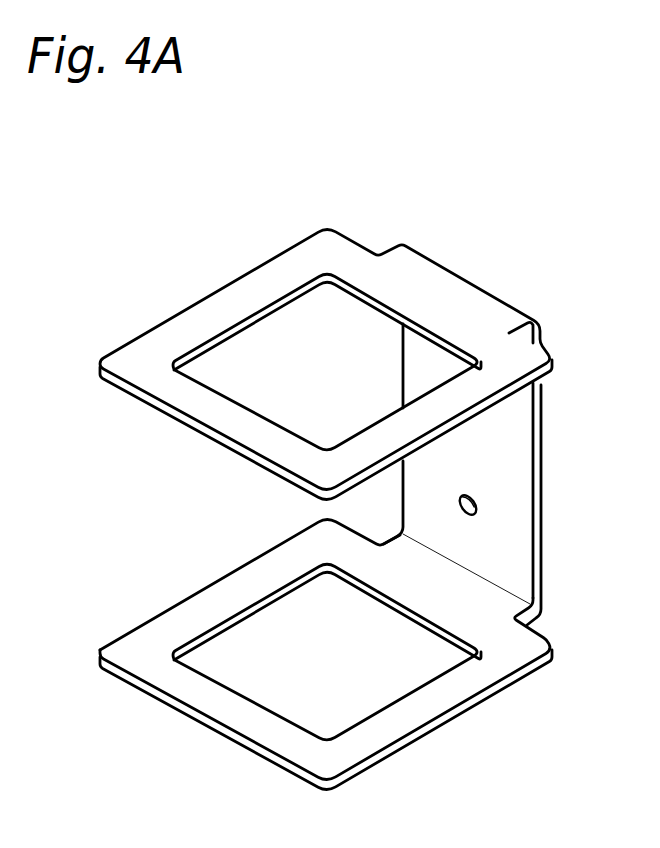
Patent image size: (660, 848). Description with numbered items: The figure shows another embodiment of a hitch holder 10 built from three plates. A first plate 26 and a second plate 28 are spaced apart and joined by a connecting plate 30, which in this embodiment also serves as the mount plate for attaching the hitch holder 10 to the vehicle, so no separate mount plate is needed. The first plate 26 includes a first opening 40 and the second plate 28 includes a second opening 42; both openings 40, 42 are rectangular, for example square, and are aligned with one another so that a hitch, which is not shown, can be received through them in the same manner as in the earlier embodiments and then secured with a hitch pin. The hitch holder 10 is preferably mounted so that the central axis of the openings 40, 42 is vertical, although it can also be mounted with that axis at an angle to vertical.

The hitch holder 10 is at (363, 454).
The first plate 26 is at (352, 654).
The second plate 28 is at (316, 348).
The connecting plate 30 is at (523, 442).
The first opening 40 is at (290, 652).
The second opening 42 is at (255, 373).